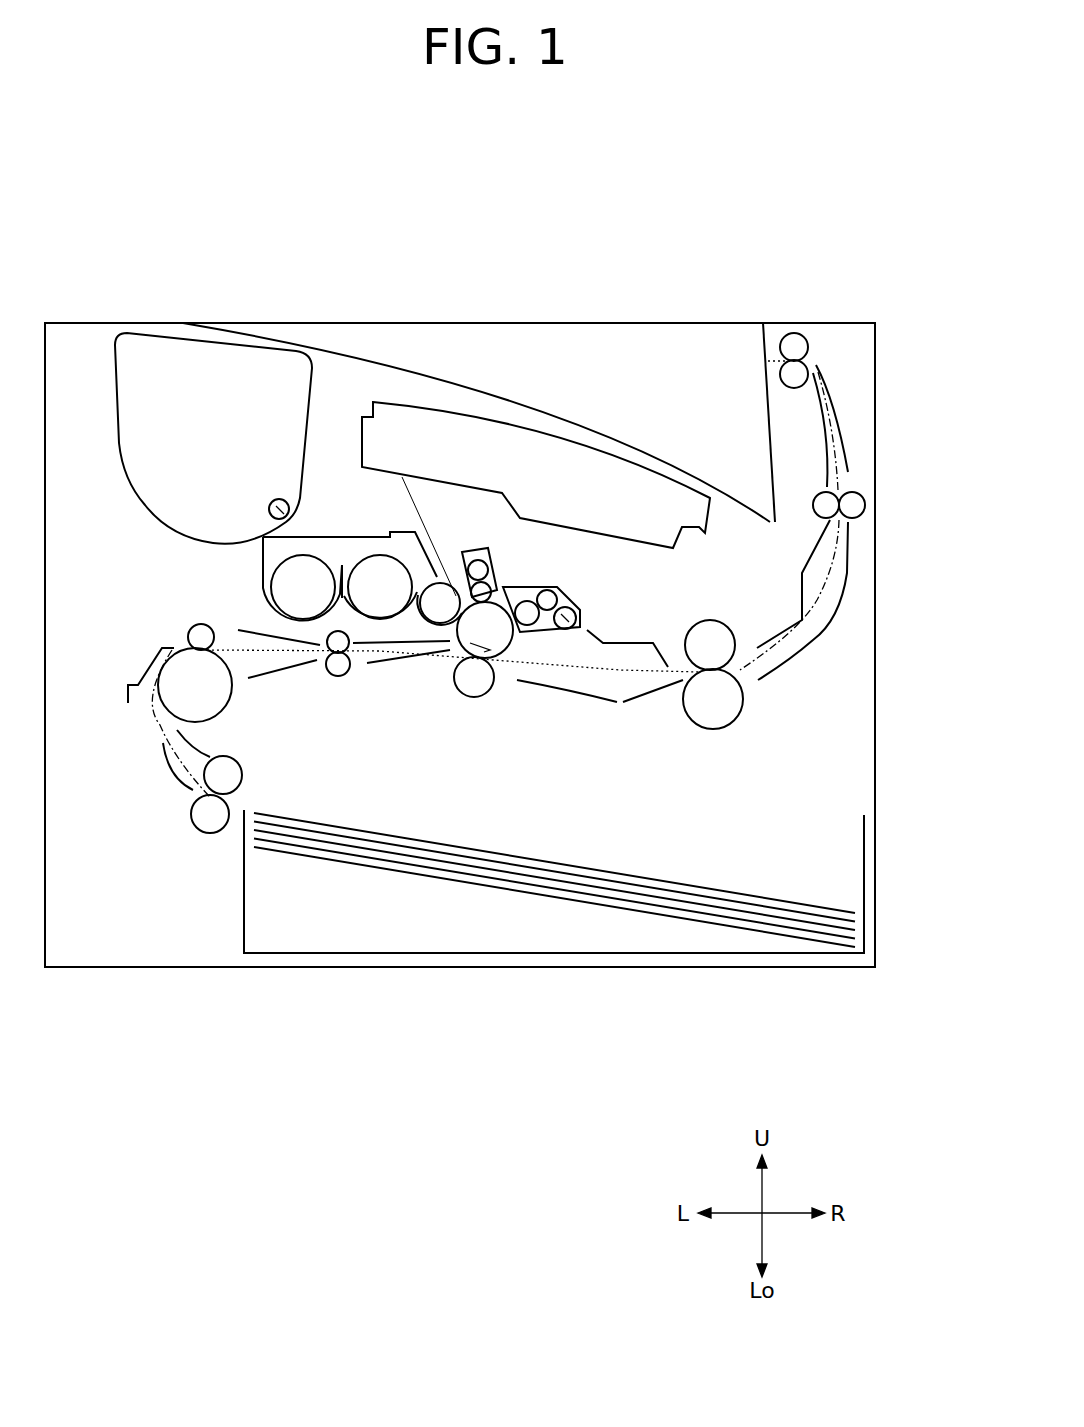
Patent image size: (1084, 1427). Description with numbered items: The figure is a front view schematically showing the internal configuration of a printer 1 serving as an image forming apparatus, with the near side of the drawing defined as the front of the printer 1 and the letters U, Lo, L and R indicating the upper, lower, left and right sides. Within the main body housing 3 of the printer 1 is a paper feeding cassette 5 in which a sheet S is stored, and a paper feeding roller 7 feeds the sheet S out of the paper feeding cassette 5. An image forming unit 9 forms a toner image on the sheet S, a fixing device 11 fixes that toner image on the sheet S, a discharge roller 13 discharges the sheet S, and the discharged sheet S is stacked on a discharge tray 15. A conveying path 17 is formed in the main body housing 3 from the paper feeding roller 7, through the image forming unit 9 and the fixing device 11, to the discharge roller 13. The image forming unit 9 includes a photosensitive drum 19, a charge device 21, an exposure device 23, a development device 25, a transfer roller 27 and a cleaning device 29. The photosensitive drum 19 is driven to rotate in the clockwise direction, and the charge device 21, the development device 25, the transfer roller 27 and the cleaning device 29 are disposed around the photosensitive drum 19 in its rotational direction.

The printer 1 is at (320, 237).
The main body housing 3 is at (878, 383).
The paper feeding cassette 5 is at (867, 855).
The paper feeding roller 7 is at (190, 810).
The image forming unit 9 is at (503, 691).
The fixing device 11 is at (716, 622).
The discharge roller 13 is at (796, 333).
The discharge tray 15 is at (590, 418).
The conveying path 17 is at (638, 672).
The photosensitive drum 19 is at (517, 642).
The charge device 21 is at (474, 545).
The exposure device 23 is at (373, 470).
The development device 25 is at (262, 577).
The transfer roller 27 is at (455, 683).
The cleaning device 29 is at (585, 598).
The sheet S is at (557, 858).